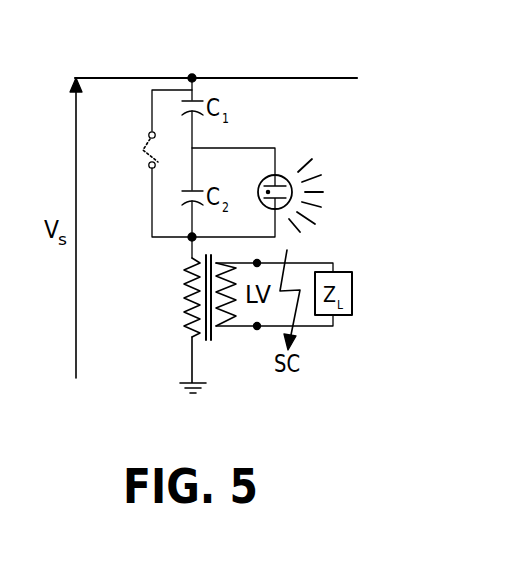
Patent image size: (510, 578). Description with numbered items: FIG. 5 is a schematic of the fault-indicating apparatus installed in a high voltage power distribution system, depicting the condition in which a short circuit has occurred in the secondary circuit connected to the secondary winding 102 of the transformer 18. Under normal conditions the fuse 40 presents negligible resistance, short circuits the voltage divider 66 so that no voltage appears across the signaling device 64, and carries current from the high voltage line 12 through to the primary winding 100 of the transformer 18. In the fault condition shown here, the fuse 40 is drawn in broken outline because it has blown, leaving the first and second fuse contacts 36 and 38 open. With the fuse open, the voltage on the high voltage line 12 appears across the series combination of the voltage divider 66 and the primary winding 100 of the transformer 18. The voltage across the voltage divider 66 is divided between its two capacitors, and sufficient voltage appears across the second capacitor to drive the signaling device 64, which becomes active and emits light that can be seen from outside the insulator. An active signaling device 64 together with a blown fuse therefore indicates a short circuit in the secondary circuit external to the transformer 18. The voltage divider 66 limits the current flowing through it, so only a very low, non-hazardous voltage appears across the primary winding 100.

The high voltage line 12 is at (136, 78).
The transformer 18 is at (189, 344).
The first fuse contact 36 is at (148, 134).
The second fuse contact 38 is at (148, 165).
The fuse 40 is at (141, 151).
The signaling device 64 is at (286, 178).
The voltage divider 66 is at (282, 171).
The primary winding 100 is at (186, 268).
The secondary winding 102 is at (222, 322).